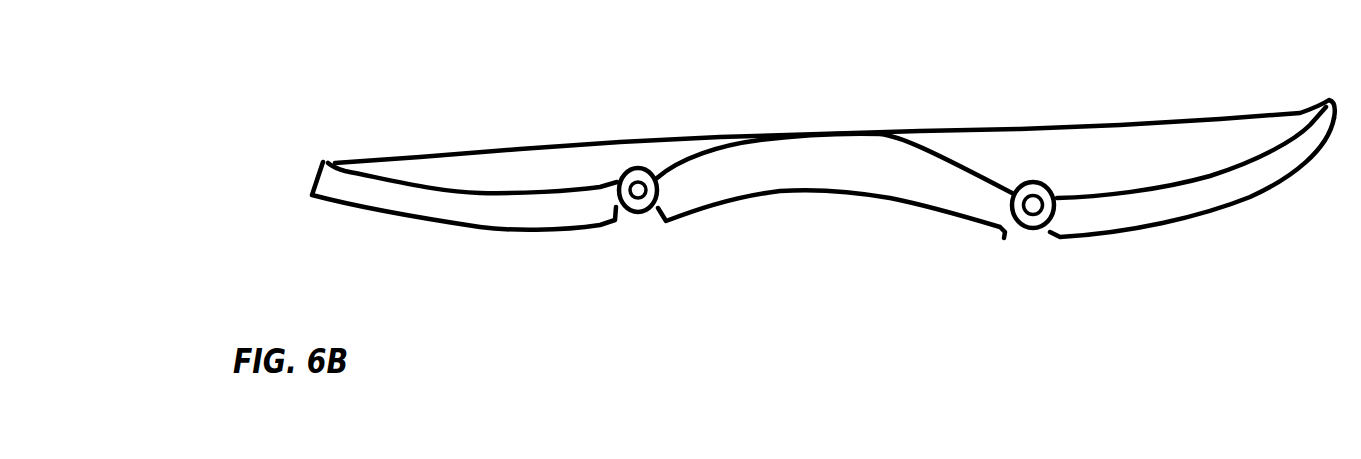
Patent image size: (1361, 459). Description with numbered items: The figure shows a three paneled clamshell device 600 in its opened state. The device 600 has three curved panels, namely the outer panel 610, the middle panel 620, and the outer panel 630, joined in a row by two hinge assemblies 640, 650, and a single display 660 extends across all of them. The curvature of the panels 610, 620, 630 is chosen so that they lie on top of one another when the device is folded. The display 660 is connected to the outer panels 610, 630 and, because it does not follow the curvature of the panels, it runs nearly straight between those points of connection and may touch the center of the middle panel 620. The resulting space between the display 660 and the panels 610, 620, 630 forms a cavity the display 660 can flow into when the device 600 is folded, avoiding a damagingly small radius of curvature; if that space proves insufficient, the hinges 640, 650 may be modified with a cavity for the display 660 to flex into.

The three paneled clamshell device 600 is at (320, 118).
The outer panel 610 is at (510, 232).
The middle panel 620 is at (803, 190).
The outer panel 630 is at (1178, 223).
The hinge assembly 640 is at (636, 215).
The hinge assembly 650 is at (1033, 230).
The display 660 is at (1079, 124).